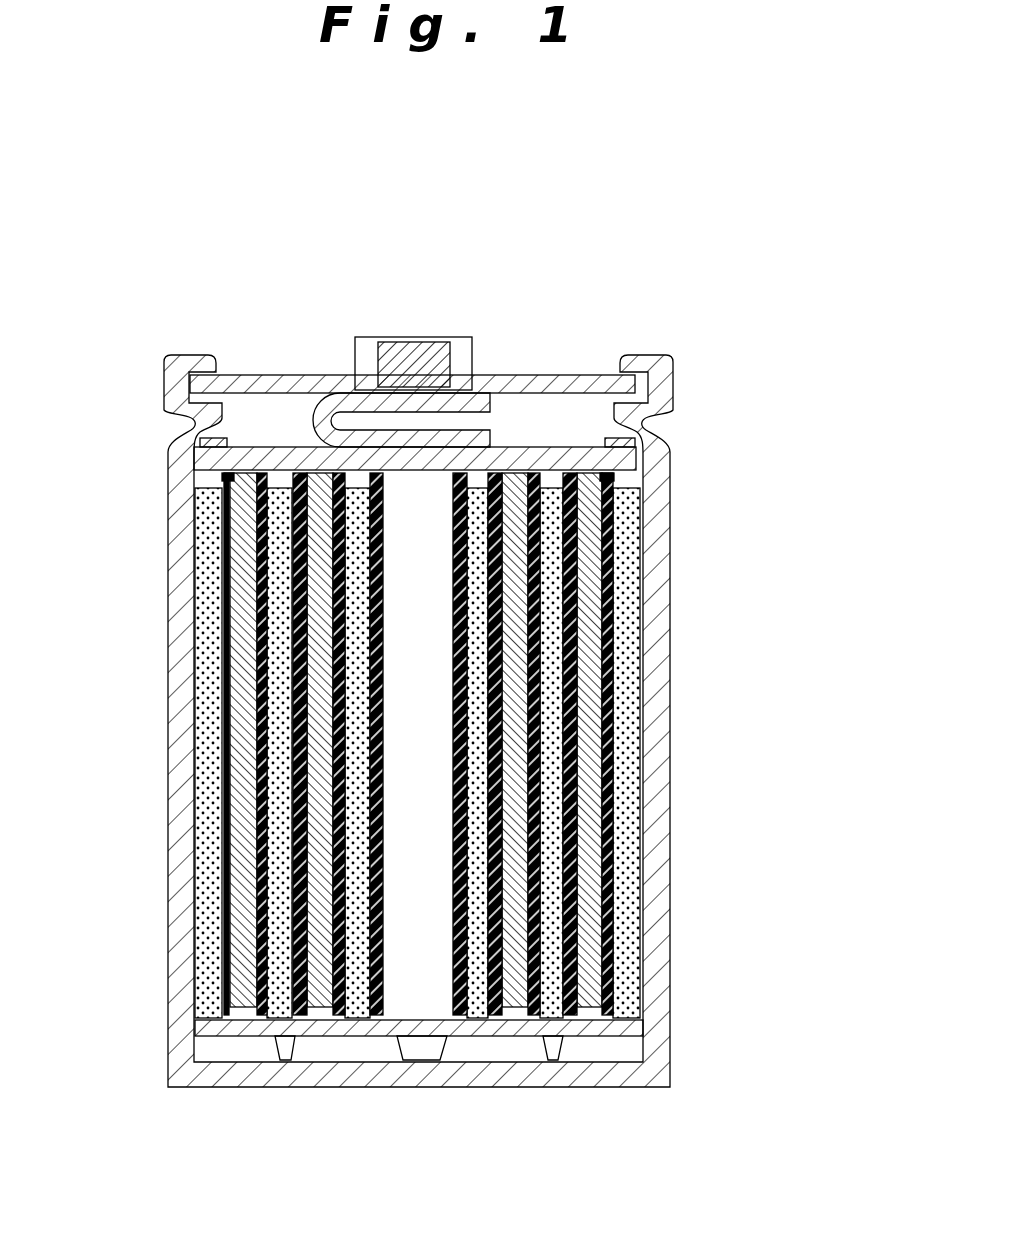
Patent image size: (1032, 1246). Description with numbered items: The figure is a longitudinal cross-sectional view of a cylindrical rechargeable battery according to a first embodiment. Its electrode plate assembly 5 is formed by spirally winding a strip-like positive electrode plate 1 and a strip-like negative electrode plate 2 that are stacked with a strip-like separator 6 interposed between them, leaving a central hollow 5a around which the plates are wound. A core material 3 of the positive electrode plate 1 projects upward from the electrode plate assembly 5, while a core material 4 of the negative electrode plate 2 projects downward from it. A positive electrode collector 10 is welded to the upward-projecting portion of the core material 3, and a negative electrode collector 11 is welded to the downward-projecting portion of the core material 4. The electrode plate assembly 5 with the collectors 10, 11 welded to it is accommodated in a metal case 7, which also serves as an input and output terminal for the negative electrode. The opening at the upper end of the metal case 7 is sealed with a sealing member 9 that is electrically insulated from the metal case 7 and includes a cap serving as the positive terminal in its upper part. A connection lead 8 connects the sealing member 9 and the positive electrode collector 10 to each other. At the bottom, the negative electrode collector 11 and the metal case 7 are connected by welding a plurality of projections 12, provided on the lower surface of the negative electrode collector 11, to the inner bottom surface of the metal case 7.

The positive electrode plate 1 is at (590, 604).
The negative electrode plate 2 is at (625, 657).
The core material of the positive electrode plate 3 is at (228, 480).
The core material of the negative electrode plate 4 is at (367, 1018).
The electrode plate assembly 5 is at (488, 745).
The central hollow 5a is at (418, 590).
The separator 6 is at (605, 713).
The metal case 7 is at (175, 1012).
The connection lead 8 is at (327, 415).
The sealing member 9 is at (250, 385).
The positive electrode collector 10 is at (565, 455).
The negative electrode collector 11 is at (498, 1030).
The projections 12 is at (552, 1045).